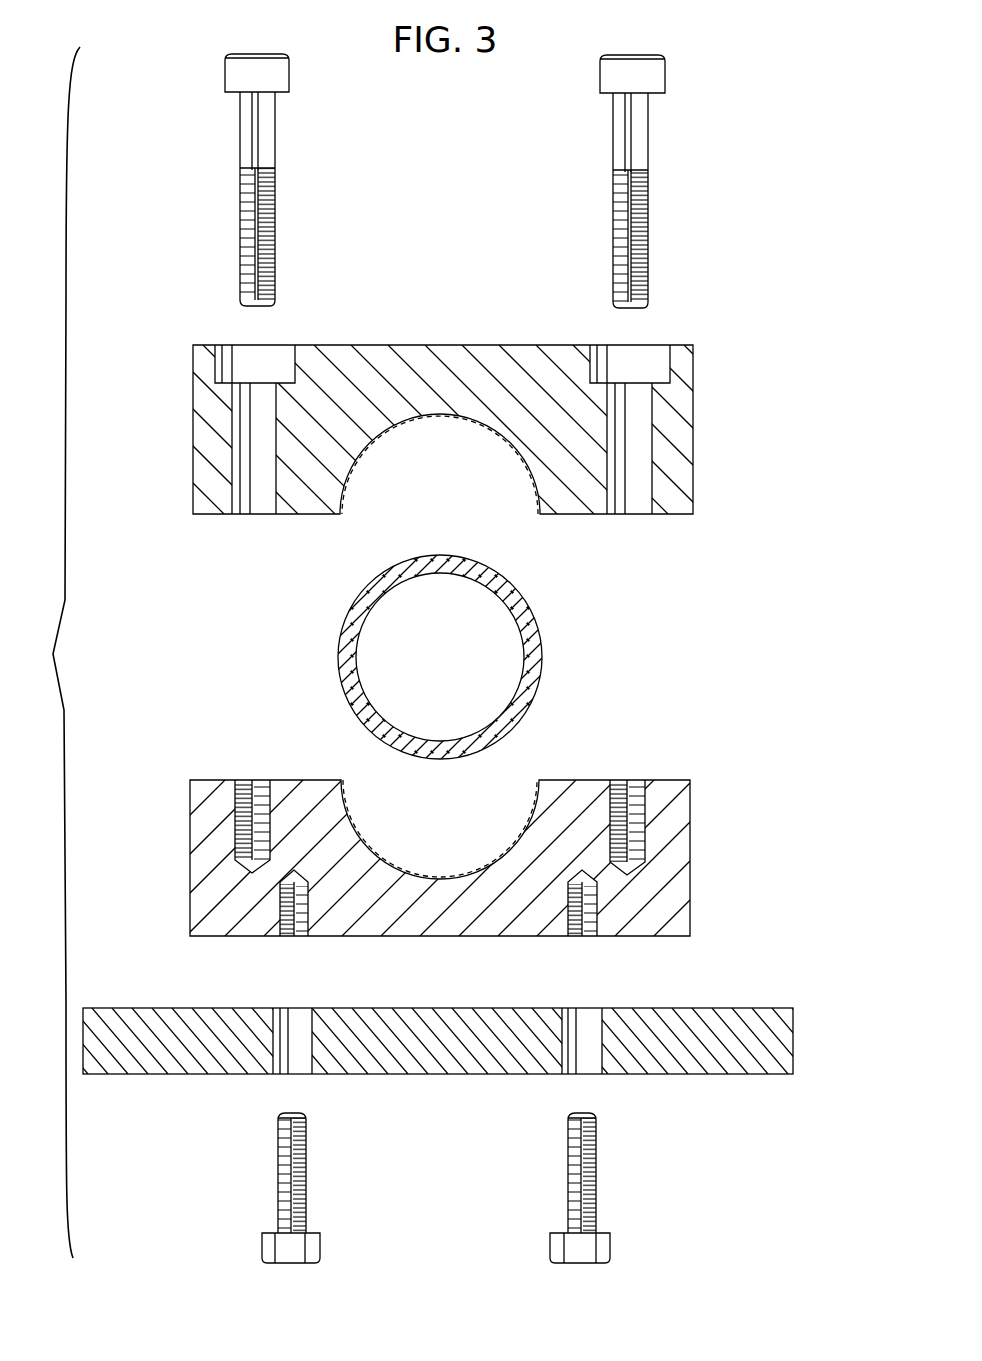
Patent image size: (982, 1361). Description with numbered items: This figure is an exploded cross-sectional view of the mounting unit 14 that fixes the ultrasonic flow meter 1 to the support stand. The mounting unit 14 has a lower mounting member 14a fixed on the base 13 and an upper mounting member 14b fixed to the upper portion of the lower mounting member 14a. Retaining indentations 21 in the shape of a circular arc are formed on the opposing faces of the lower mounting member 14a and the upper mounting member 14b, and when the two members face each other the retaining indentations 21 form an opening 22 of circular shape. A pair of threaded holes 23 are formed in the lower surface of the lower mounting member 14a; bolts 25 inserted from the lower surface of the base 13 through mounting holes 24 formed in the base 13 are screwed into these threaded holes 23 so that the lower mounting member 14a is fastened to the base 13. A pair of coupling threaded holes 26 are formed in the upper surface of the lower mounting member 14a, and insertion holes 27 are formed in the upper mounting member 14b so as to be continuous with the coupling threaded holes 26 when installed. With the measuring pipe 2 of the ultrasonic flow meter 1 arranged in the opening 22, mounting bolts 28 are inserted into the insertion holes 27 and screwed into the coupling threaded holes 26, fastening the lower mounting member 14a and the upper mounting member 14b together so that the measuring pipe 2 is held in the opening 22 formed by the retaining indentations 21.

The ultrasonic flow meter 1 is at (498, 654).
The measuring pipe 2 is at (579, 612).
The base 13 is at (430, 1041).
The mounting unit 14 is at (435, 472).
The lower mounting member 14a is at (439, 852).
The upper mounting member 14b is at (435, 472).
The retaining indentation 21 is at (345, 487).
The opening 22 is at (510, 782).
The threaded hole 23 is at (298, 937).
The mounting hole 24 is at (285, 1077).
The bolt 25 is at (307, 1150).
The coupling threaded hole 26 is at (256, 785).
The insertion hole 27 is at (252, 505).
The mounting bolt 28 is at (275, 125).